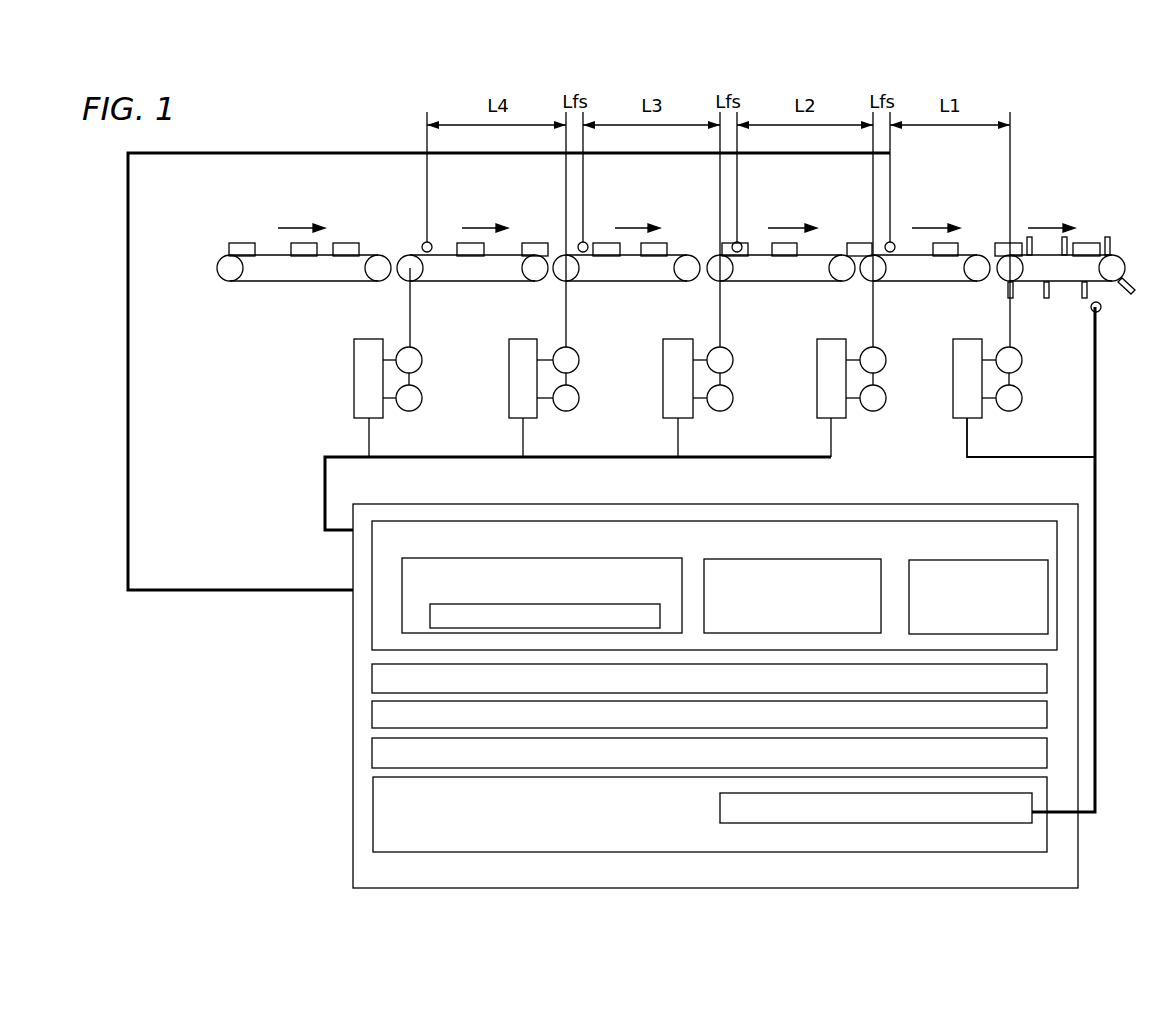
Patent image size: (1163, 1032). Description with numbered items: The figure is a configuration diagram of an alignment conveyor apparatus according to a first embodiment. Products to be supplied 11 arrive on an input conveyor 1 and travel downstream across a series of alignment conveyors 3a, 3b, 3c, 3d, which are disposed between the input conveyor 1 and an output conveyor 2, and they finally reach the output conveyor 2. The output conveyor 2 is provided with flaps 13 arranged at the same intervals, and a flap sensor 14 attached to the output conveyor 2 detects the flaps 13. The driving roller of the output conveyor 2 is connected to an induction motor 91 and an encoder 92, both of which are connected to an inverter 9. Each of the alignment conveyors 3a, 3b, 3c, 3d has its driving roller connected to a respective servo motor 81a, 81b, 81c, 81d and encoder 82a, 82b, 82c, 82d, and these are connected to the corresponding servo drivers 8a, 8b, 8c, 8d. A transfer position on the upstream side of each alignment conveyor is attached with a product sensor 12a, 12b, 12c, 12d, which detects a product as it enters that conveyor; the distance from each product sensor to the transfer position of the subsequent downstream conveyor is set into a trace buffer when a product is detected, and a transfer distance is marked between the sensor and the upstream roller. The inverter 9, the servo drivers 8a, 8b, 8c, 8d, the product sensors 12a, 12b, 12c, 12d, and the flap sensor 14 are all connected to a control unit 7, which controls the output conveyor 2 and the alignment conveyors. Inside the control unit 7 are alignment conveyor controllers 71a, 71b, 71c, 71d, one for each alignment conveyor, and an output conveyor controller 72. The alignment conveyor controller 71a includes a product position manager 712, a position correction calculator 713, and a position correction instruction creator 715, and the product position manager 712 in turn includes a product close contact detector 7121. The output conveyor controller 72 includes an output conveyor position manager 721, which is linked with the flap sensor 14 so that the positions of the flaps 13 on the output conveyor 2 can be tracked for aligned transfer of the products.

The input conveyor 1 is at (217, 268).
The product to be supplied 11 is at (241, 243).
The output conveyor 2 is at (1122, 258).
The flap 13 is at (1108, 237).
The flap sensor 14 is at (1102, 309).
The alignment conveyor 3a is at (973, 255).
The alignment conveyor 3b is at (838, 255).
The alignment conveyor 3c is at (683, 255).
The alignment conveyor 3d is at (405, 255).
The product sensor 12a is at (894, 241).
The product sensor 12b is at (744, 241).
The product sensor 12c is at (589, 241).
The product sensor 12d is at (431, 241).
The servo driver 8a is at (831, 339).
The servo driver 8b is at (676, 339).
The servo driver 8c is at (522, 339).
The servo driver 8d is at (367, 339).
The servo motor 81a is at (886, 360).
The servo motor 81b is at (733, 360).
The servo motor 81c is at (579, 360).
The servo motor 81d is at (422, 360).
The encoder 82a is at (886, 398).
The encoder 82b is at (733, 398).
The encoder 82c is at (579, 398).
The encoder 82d is at (422, 398).
The inverter 9 is at (965, 339).
The induction motor 91 is at (1022, 360).
The encoder 92 is at (1022, 398).
The control unit 7 is at (353, 862).
The alignment conveyor controller 71a is at (372, 622).
The alignment conveyor controller 71b is at (372, 677).
The alignment conveyor controller 71c is at (372, 716).
The alignment conveyor controller 71d is at (372, 754).
The product position manager 712 is at (540, 558).
The product close contact detector 7121 is at (565, 588).
The position correction calculator 713 is at (795, 559).
The position correction instruction creator 715 is at (975, 560).
The output conveyor controller 72 is at (373, 812).
The output conveyor position manager 721 is at (720, 810).